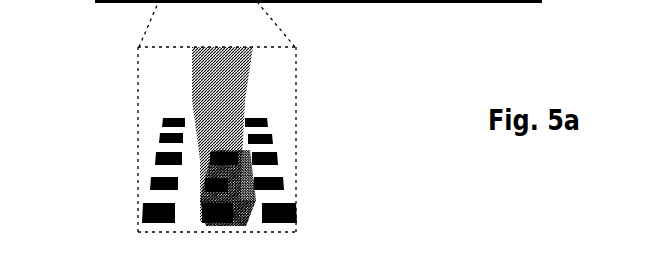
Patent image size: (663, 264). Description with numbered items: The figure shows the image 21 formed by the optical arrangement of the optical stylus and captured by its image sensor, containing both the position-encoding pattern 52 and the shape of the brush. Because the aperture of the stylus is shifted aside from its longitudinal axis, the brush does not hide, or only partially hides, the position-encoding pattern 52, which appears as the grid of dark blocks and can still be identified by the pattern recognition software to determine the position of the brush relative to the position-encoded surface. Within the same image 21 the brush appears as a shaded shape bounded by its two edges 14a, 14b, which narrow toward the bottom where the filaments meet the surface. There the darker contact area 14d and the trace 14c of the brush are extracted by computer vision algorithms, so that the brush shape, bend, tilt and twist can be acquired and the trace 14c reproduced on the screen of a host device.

The edge of the brush 14a is at (192, 63).
The edge of the brush 14b is at (250, 88).
The trace 14c is at (268, 216).
The contact area 14d is at (257, 196).
The image 21 is at (140, 95).
The position-encoding pattern 52 is at (290, 126).